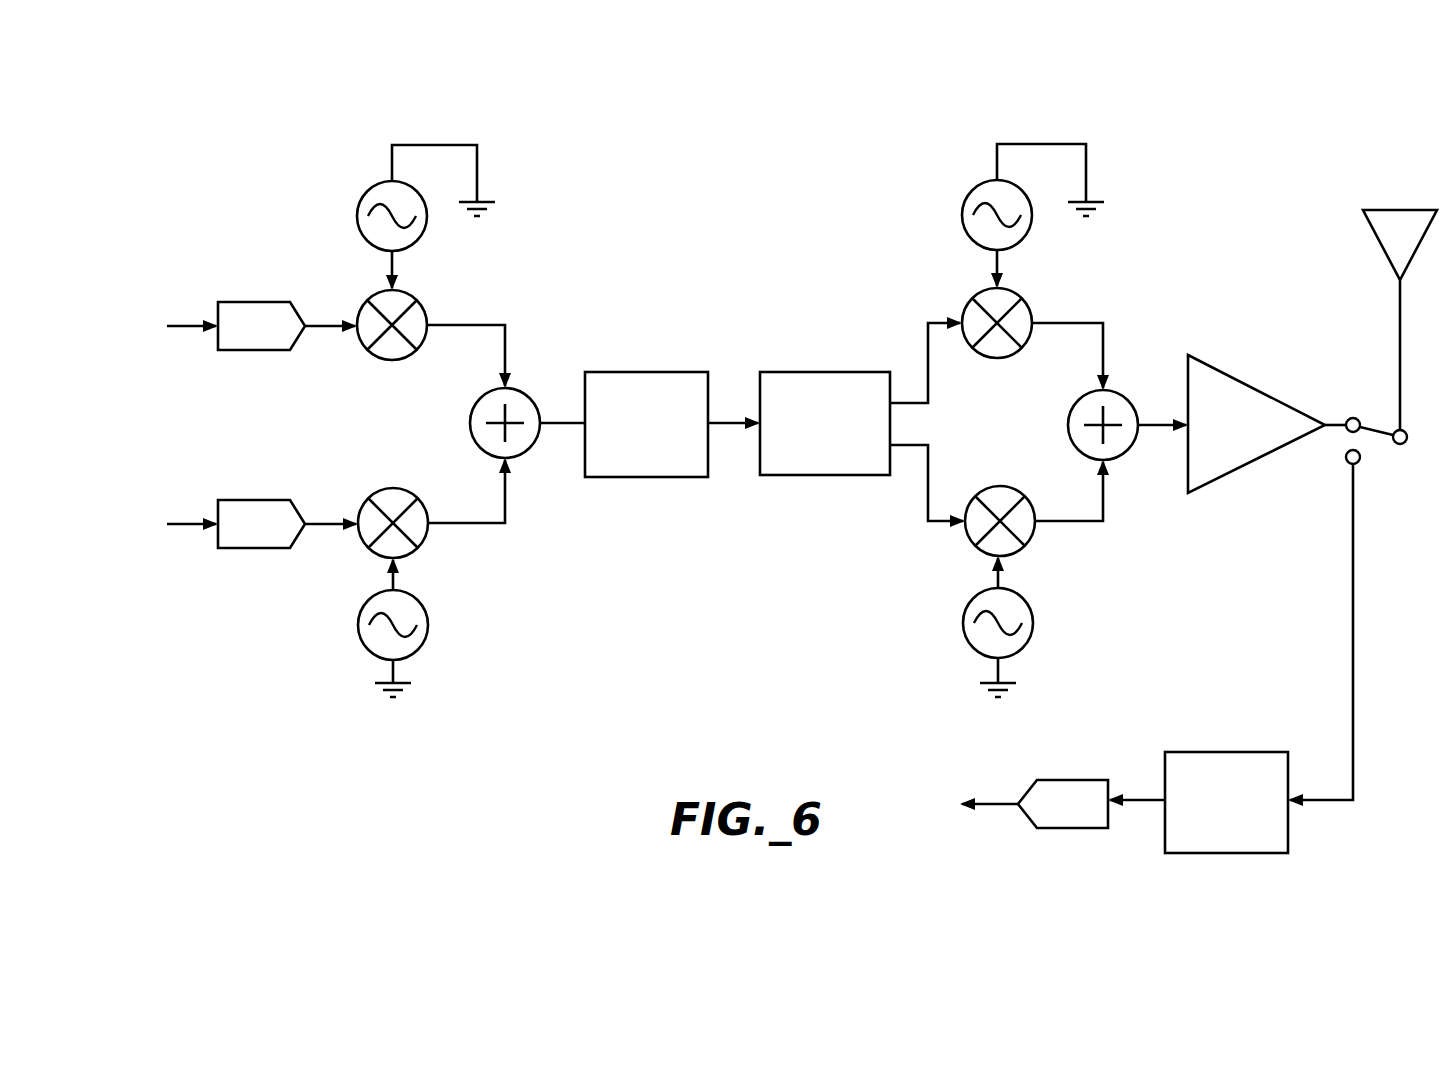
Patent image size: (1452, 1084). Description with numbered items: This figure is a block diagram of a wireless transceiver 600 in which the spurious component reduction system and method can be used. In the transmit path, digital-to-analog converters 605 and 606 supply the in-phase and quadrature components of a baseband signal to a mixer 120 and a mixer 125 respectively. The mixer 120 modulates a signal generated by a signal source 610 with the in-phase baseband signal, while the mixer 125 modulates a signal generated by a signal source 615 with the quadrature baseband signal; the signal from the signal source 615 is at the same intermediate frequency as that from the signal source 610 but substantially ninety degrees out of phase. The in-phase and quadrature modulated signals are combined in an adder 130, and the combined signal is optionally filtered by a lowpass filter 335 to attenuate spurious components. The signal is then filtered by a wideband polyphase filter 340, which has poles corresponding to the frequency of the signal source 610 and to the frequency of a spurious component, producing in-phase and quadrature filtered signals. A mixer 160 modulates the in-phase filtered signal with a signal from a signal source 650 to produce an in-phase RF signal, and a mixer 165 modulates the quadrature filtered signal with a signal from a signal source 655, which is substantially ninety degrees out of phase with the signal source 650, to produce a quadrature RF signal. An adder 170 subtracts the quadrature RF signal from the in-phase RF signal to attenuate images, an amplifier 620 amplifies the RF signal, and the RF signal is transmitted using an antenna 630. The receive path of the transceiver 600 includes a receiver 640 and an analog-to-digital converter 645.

The wireless transceiver 600 is at (710, 188).
The digital-to-analog converter 605 is at (258, 302).
The digital-to-analog converter 606 is at (258, 500).
The signal source 610 is at (424, 230).
The signal source 615 is at (432, 628).
The mixer 120 is at (422, 302).
The mixer 125 is at (428, 540).
The adder 130 is at (470, 428).
The lowpass filter 335 is at (640, 372).
The wideband polyphase filter 340 is at (833, 372).
The signal source 650 is at (960, 213).
The signal source 655 is at (1034, 627).
The mixer 160 is at (966, 303).
The mixer 165 is at (963, 530).
The adder 170 is at (1068, 422).
The amplifier 620 is at (1238, 377).
The antenna 630 is at (1397, 210).
The receiver 640 is at (1225, 752).
The analog-to-digital converter 645 is at (1070, 780).